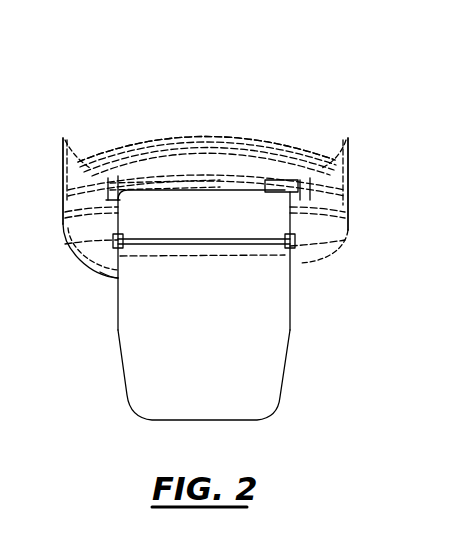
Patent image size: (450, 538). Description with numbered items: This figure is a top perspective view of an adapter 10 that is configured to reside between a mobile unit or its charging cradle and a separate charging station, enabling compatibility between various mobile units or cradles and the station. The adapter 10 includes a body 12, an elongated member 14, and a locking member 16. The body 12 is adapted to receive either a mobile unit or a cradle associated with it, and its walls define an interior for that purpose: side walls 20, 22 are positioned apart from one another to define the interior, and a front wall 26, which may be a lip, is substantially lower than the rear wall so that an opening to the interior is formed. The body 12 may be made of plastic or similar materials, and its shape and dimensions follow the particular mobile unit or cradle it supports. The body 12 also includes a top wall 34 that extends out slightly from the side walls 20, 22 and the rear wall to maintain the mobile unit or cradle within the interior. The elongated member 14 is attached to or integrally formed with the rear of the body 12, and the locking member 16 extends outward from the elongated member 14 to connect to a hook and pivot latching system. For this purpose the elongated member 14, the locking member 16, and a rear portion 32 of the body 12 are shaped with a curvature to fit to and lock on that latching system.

The adapter 10 is at (216, 66).
The body 12 is at (299, 138).
The elongated member 14 is at (272, 215).
The locking member 16 is at (283, 358).
The side wall 20 is at (65, 165).
The side wall 22 is at (348, 167).
The front wall 26 is at (225, 120).
The rear portion 32 is at (110, 272).
The top wall 34 is at (82, 176).